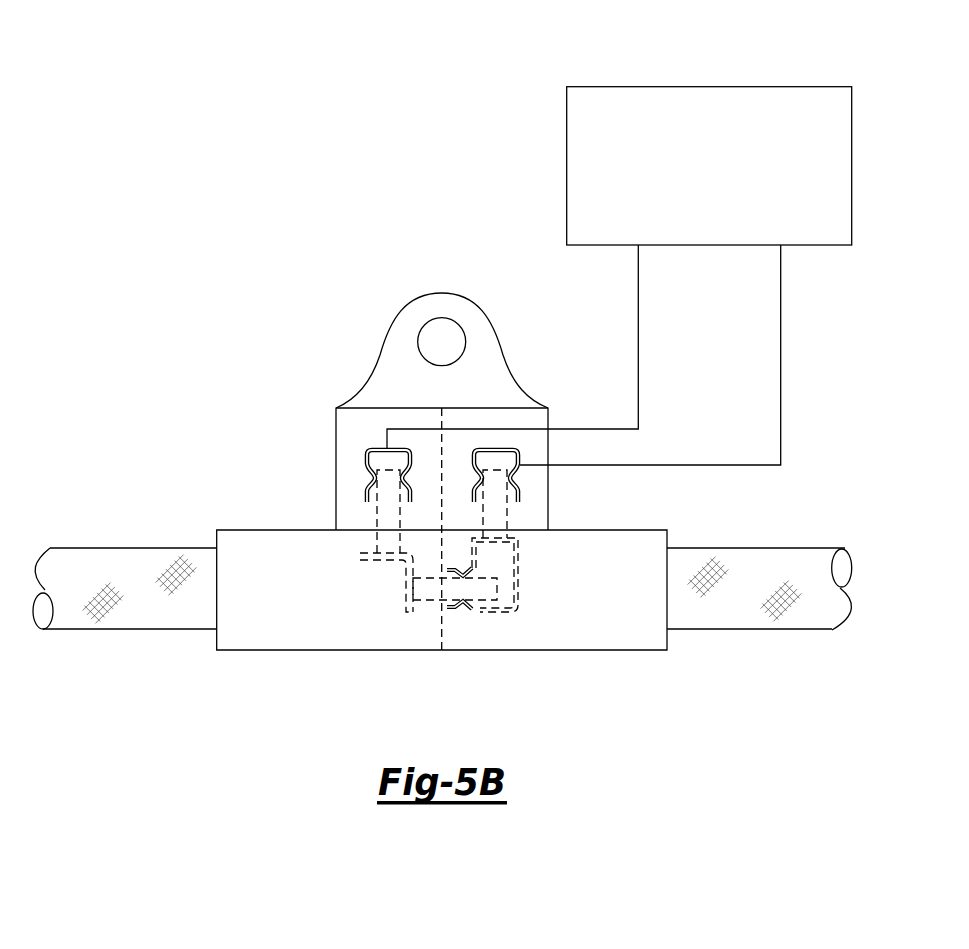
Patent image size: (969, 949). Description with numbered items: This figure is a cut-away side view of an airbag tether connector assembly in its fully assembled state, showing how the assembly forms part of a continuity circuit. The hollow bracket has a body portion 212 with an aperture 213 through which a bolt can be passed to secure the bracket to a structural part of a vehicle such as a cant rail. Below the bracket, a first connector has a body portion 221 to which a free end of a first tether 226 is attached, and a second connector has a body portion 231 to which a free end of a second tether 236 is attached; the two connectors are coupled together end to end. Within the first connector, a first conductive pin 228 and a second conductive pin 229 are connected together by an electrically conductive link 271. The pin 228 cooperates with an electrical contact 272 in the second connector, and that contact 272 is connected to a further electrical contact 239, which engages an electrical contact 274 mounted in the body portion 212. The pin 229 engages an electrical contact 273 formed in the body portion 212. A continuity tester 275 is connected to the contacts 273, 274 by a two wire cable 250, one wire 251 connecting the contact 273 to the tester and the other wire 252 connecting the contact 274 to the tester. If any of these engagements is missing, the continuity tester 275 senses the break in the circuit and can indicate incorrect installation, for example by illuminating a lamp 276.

The body portion 212 is at (363, 368).
The aperture 213 is at (428, 322).
The body portion 221 is at (272, 629).
The first tether 226 is at (127, 629).
The conductive pin 228 is at (419, 612).
The conductive pin 229 is at (385, 510).
The body portion 231 is at (605, 629).
The second tether 236 is at (748, 629).
The electrical contact 239 is at (498, 518).
The two wire cable 250 is at (627, 355).
The wire 251 is at (638, 338).
The wire 252 is at (780, 390).
The electrically conductive link 271 is at (413, 598).
The electrical contact 272 is at (492, 612).
The electrical contact 273 is at (367, 465).
The electrical contact 274 is at (520, 452).
The continuity tester 275 is at (726, 183).
The lamp 276 is at (607, 118).